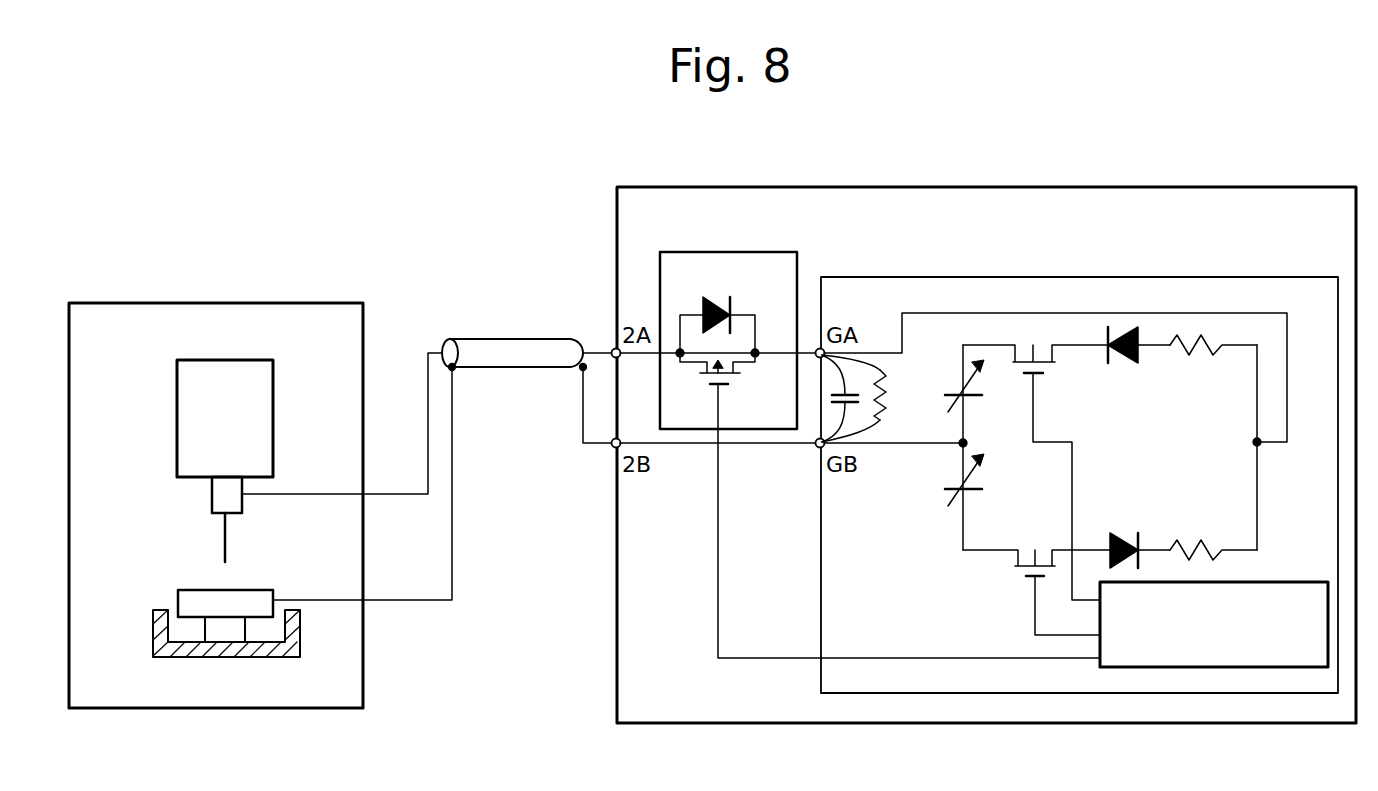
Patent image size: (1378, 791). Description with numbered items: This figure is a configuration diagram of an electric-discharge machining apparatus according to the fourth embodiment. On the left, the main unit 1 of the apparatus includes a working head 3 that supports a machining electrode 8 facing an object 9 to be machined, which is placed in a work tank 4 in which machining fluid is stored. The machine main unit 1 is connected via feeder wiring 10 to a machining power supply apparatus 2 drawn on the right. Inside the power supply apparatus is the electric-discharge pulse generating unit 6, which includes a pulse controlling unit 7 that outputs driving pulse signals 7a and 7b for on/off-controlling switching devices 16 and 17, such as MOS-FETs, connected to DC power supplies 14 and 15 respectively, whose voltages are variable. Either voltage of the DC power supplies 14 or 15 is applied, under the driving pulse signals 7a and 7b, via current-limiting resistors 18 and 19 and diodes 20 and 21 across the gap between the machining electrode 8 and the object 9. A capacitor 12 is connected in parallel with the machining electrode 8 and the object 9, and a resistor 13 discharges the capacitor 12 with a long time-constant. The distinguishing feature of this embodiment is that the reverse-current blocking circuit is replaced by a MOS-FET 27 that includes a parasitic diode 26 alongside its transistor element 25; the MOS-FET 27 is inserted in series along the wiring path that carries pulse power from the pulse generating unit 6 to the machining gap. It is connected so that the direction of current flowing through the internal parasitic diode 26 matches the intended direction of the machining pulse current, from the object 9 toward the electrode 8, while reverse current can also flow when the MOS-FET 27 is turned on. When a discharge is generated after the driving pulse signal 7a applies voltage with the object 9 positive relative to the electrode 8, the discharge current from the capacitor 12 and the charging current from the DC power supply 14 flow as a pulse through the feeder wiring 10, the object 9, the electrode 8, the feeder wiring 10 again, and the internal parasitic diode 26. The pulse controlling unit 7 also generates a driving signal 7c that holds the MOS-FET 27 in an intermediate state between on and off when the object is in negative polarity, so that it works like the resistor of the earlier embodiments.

The main unit 1 is at (260, 303).
The machining power supply apparatus 2 is at (617, 597).
The working head 3 is at (177, 405).
The work tank 4 is at (153, 625).
The electric-discharge pulse generating unit 6 is at (821, 677).
The pulse controlling unit 7 is at (1287, 582).
The driving pulse signal 7a is at (1074, 452).
The driving pulse signal 7b is at (1033, 633).
The driving signal 7c is at (913, 657).
The machining electrode 8 is at (228, 538).
The object to be machined 9 is at (197, 590).
The feeder wiring 10 is at (524, 347).
The capacitor 12 is at (850, 376).
The resistor 13 is at (882, 410).
The DC power supply 14 is at (962, 382).
The DC power supply 15 is at (955, 487).
The switching device 16 is at (1036, 376).
The switching device 17 is at (1027, 579).
The current-limiting resistor 18 is at (1200, 355).
The current-limiting resistor 19 is at (1198, 546).
The diode 20 is at (1125, 366).
The diode 21 is at (1124, 534).
The switching transistor 25 is at (724, 388).
The internal parasitic diode 26 is at (713, 296).
The MOS-FET 27 is at (750, 252).